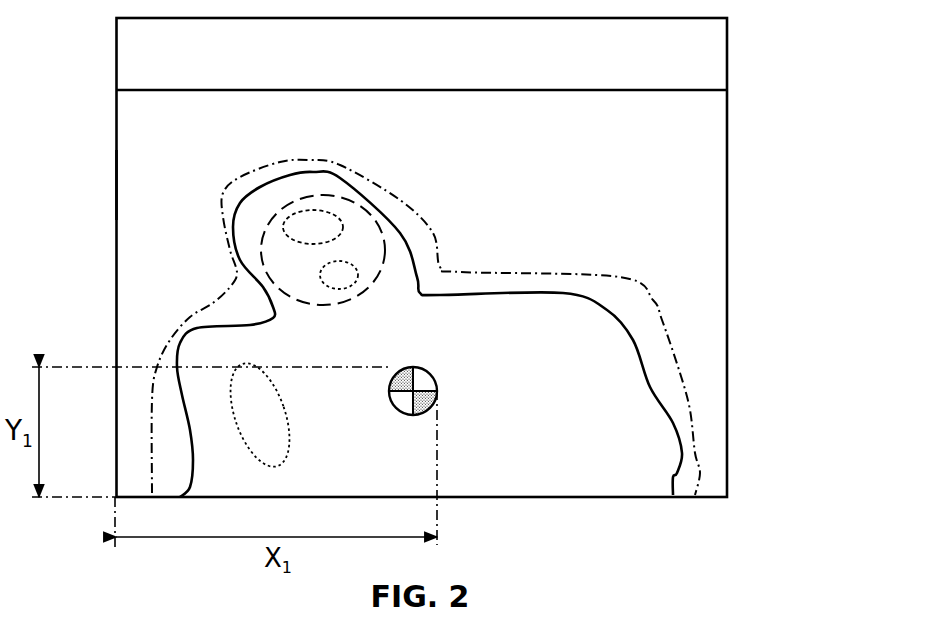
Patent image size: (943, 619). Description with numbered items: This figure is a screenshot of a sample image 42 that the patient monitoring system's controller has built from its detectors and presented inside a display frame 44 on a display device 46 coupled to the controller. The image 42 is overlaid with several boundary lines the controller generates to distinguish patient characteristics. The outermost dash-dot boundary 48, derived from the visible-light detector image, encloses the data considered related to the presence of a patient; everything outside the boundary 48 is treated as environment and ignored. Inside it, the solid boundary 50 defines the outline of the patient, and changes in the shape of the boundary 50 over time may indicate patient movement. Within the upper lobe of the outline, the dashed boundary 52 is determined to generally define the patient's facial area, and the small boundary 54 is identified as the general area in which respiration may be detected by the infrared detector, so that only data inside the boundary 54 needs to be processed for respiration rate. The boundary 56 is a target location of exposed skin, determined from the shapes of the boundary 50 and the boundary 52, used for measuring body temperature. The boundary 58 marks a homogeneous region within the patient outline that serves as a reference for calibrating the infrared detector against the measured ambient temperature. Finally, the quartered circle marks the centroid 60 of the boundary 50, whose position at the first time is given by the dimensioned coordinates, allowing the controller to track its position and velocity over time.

The sample image 42 is at (707, 243).
The display frame 44 is at (752, 138).
The display device 46 is at (113, 181).
The boundary 48 is at (670, 337).
The boundary 50 is at (678, 428).
The boundary 52 is at (400, 235).
The boundary 54 is at (318, 270).
The boundary 56 is at (275, 213).
The boundary 58 is at (223, 397).
The centroid 60 is at (417, 366).